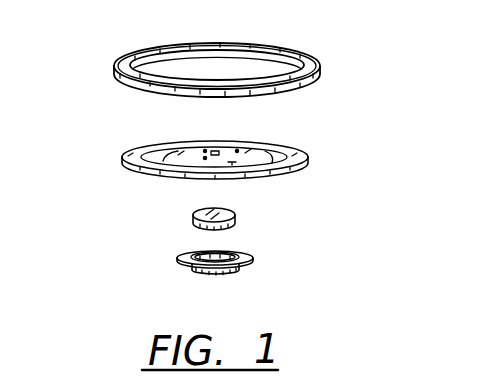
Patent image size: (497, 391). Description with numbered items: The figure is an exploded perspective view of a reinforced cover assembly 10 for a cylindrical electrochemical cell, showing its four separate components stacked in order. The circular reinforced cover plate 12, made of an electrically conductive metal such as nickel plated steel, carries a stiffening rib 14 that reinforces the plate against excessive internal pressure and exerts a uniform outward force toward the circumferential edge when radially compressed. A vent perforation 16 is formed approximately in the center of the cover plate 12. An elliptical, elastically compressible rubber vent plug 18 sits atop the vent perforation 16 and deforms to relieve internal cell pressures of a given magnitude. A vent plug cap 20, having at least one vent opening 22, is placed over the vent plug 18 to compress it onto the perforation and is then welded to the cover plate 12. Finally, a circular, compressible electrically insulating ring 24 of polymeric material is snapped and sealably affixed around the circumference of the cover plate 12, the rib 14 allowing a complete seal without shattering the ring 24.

The reinforced cover assembly 10 is at (350, 68).
The reinforced cover plate 12 is at (306, 155).
The stiffening rib 14 is at (277, 157).
The vent perforation 16 is at (215, 151).
The vent plug 18 is at (235, 215).
The vent plug cap 20 is at (243, 273).
The vent opening 22 is at (210, 273).
The electrically insulating ring 24 is at (112, 72).